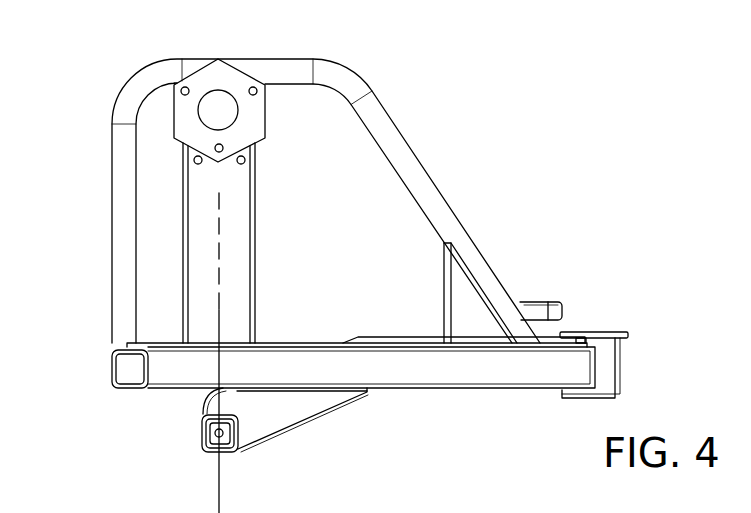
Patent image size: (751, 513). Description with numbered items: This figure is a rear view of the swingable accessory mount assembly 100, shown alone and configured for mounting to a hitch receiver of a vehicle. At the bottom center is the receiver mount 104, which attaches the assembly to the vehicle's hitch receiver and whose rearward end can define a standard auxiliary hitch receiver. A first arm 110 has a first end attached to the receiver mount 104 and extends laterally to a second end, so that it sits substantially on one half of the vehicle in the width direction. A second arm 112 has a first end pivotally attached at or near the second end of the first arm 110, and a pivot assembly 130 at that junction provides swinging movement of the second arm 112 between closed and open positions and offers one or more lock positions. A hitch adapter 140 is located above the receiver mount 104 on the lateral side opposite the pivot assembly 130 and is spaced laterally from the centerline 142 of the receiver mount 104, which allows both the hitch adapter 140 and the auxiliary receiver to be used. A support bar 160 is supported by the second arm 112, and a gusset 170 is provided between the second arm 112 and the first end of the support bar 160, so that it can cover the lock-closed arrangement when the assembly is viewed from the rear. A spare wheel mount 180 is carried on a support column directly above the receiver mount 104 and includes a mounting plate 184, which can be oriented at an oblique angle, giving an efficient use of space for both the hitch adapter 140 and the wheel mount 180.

The accessory mount assembly 100 is at (343, 256).
The receiver mount 104 is at (190, 463).
The first arm 110 is at (333, 395).
The second arm 112 is at (462, 373).
The pivot assembly 130 is at (621, 320).
The hitch adapter 140 is at (112, 367).
The centerline 142 is at (221, 492).
The support bar 160 is at (408, 135).
The gusset 170 is at (468, 297).
The spare wheel mount 180 is at (270, 232).
The mounting plate 184 is at (225, 81).